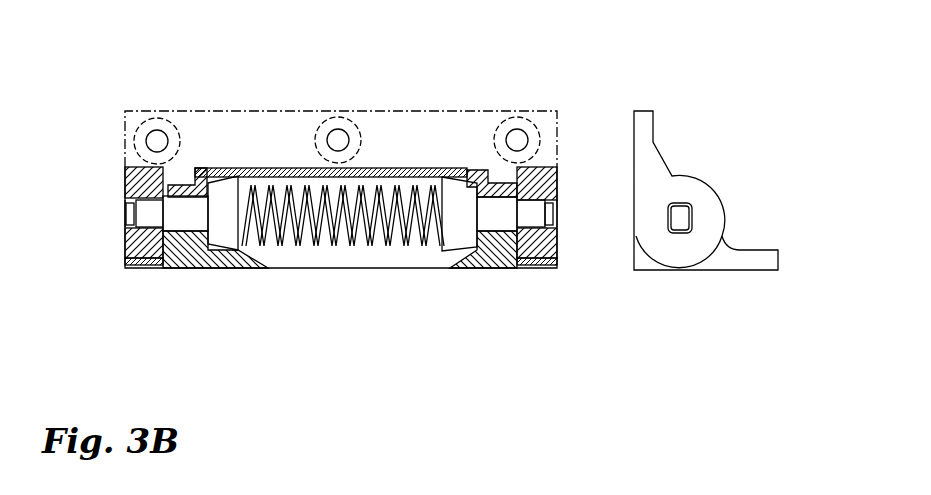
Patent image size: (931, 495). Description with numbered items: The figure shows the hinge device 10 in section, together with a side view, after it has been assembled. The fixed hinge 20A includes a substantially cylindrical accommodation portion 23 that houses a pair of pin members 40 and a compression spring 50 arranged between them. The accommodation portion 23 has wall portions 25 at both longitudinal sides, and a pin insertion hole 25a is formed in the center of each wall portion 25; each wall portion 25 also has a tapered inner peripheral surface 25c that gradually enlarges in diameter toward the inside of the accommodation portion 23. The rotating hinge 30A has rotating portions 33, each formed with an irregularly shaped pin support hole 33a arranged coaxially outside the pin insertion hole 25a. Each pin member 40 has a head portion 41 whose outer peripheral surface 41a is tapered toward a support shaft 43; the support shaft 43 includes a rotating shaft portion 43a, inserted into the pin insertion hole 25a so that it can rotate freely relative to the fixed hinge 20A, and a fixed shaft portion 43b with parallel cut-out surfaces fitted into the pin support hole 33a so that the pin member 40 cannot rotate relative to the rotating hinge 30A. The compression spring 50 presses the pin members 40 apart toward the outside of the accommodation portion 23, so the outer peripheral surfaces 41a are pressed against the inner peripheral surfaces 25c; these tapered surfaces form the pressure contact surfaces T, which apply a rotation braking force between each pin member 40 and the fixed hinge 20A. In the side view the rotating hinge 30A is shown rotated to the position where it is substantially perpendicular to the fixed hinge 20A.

The hinge device 10 is at (307, 166).
The fixed hinge 20A is at (243, 166).
The accommodation portion 23 is at (293, 168).
The wall portion 25 is at (188, 267).
The pin insertion hole 25a is at (190, 270).
The inner peripheral surface 25c is at (463, 187).
The rotating hinge 30A is at (545, 165).
The rotating portion 33 is at (127, 175).
The pin support hole 33a is at (127, 193).
The pin member 40 is at (120, 218).
The head portion 41 is at (238, 248).
The outer peripheral surface 41a is at (450, 183).
The support shaft 43 is at (45, 263).
The rotating shaft portion 43a is at (145, 268).
The fixed shaft portion 43b is at (132, 218).
The compression spring 50 is at (350, 247).
The pressure contact surfaces T is at (403, 53).